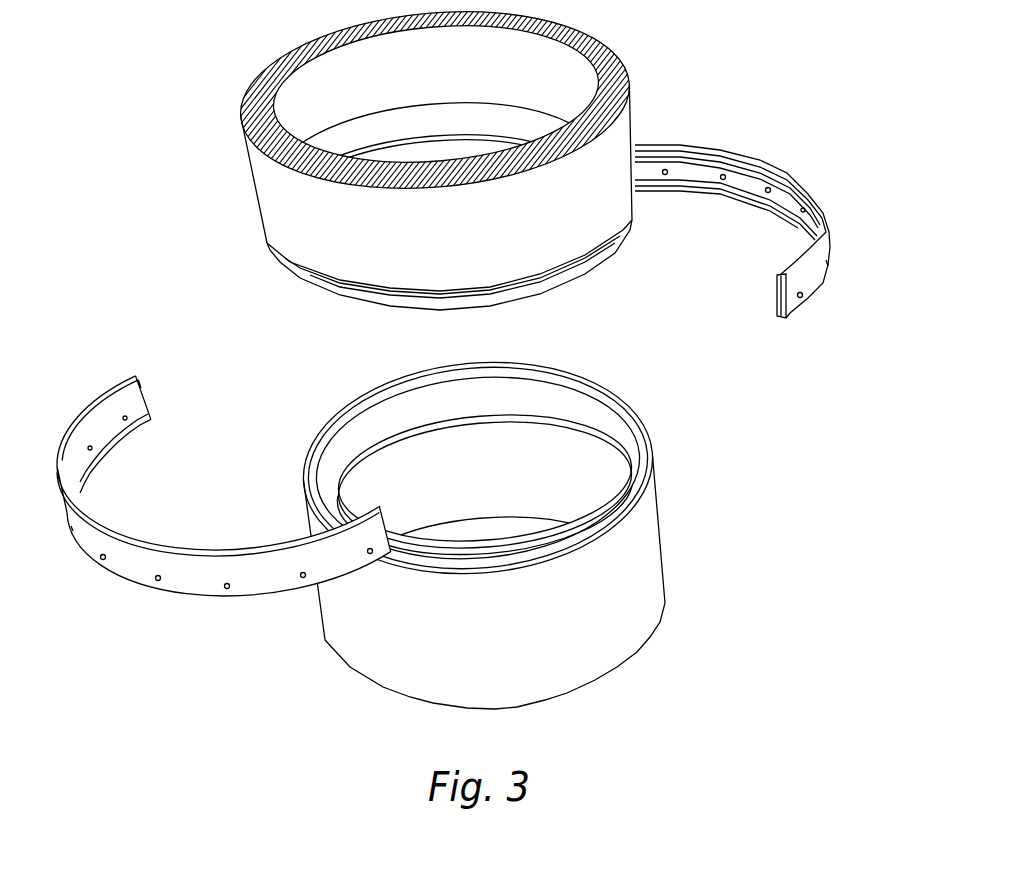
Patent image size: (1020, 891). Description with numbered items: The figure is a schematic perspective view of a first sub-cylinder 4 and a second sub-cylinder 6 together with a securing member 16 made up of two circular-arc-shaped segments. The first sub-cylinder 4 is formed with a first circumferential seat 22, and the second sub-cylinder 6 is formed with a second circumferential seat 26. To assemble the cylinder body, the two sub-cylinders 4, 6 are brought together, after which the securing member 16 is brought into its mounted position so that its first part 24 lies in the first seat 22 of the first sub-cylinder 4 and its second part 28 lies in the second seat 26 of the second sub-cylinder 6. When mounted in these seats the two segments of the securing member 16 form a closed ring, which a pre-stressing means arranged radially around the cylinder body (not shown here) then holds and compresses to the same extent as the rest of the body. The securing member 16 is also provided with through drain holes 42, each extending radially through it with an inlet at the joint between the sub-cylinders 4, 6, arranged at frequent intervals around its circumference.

The first sub-cylinder 4 is at (466, 170).
The second sub-cylinder 6 is at (517, 558).
The securing member 16 is at (459, 378).
The first circumferential seat 22 is at (570, 268).
The first part of the securing member 24 is at (140, 390).
The second circumferential seat 26 is at (643, 487).
The second part of the securing member 28 is at (83, 465).
The through drain hole 42 is at (157, 578).